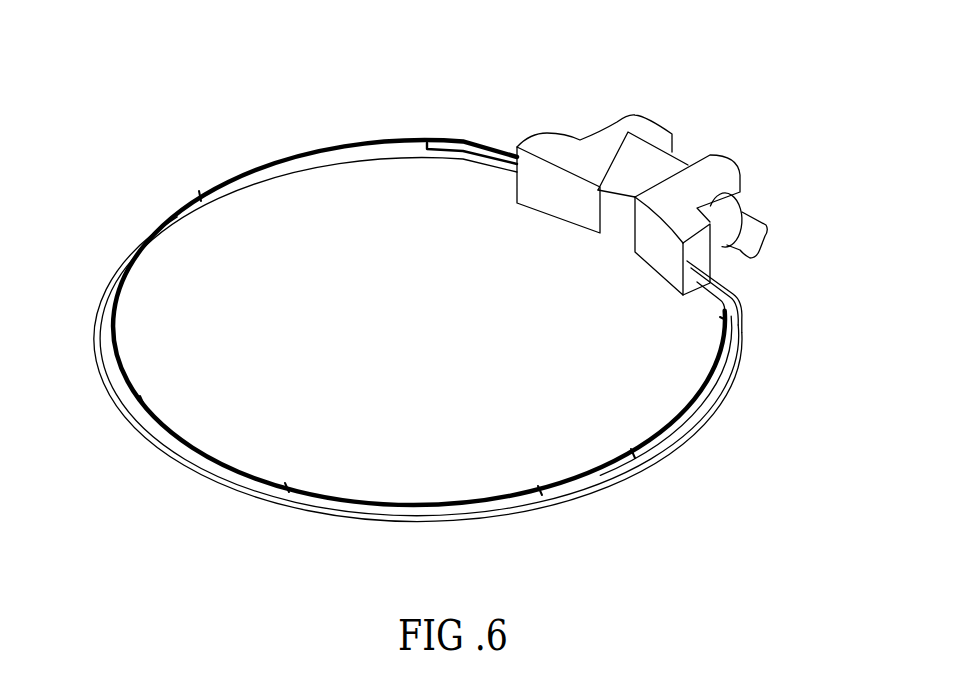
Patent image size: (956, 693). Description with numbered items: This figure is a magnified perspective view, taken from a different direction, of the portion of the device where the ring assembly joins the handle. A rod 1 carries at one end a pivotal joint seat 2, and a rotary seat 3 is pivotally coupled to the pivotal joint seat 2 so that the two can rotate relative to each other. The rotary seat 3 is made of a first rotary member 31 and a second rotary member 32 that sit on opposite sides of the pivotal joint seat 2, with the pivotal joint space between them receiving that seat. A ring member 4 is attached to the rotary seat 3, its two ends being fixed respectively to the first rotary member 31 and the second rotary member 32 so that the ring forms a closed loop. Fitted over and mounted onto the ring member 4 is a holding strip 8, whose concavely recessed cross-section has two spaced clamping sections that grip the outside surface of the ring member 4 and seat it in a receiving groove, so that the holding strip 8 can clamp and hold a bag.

The rod 1 is at (748, 225).
The pivotal joint seat 2 is at (668, 158).
The rotary seat 3 is at (637, 172).
The first rotary member 31 is at (568, 150).
The second rotary member 32 is at (713, 173).
The ring member 4 is at (143, 418).
The holding strip 8 is at (340, 507).